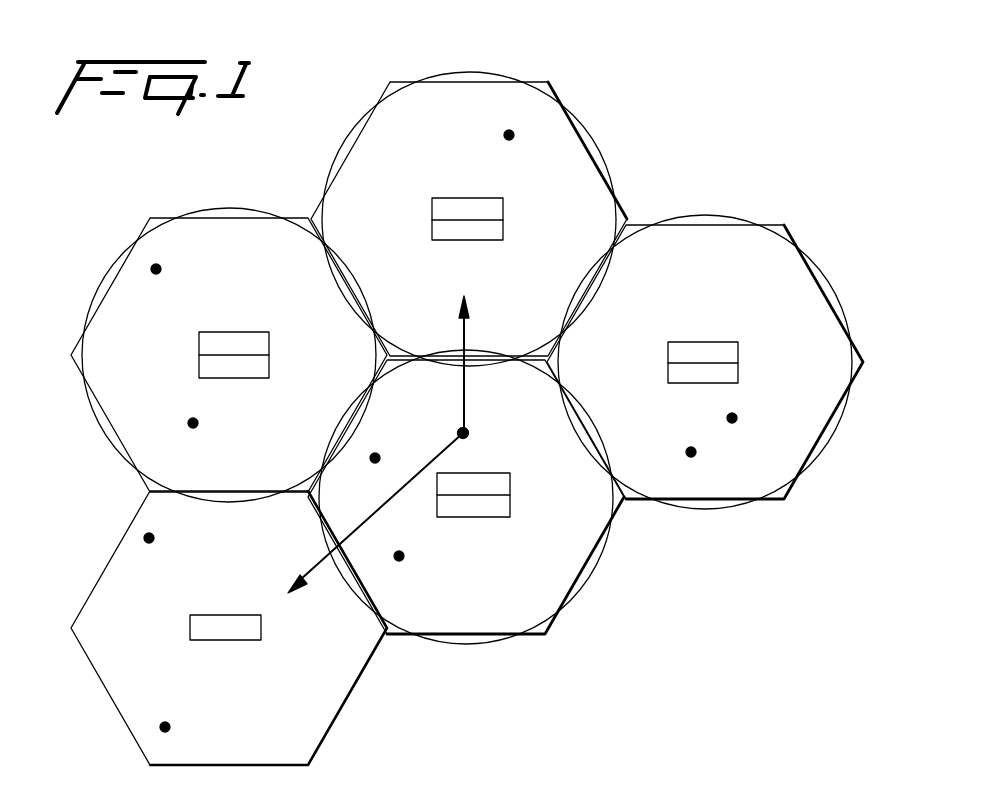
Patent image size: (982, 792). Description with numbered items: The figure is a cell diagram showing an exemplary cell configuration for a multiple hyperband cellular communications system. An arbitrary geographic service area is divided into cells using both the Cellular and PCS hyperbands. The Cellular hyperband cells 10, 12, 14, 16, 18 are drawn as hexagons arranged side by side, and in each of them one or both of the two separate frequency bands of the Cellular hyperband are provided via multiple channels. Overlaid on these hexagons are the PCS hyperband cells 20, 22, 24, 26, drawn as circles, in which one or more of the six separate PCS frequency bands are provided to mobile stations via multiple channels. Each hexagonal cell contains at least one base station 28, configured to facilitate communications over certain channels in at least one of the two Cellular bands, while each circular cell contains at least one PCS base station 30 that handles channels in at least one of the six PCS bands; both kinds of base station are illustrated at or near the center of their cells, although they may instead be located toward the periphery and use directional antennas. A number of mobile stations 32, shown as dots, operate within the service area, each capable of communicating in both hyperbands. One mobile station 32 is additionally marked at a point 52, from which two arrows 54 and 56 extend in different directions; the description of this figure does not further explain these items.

The Cellular hyperband cell 10 is at (577, 137).
The Cellular hyperband cell 12 is at (108, 287).
The Cellular hyperband cell 14 is at (818, 290).
The Cellular hyperband cell 16 is at (585, 565).
The Cellular hyperband cell 18 is at (100, 680).
The PCS hyperband cell 20 is at (488, 72).
The PCS hyperband cell 22 is at (213, 207).
The PCS hyperband cell 24 is at (723, 215).
The PCS hyperband cell 26 is at (462, 643).
The base station 28 is at (497, 203).
The PCS base station 30 is at (497, 230).
The mobile station 32 is at (505, 138).
The mobile station location 52 is at (457, 431).
The direction vector 54 is at (468, 327).
The velocity vector 56 is at (317, 573).